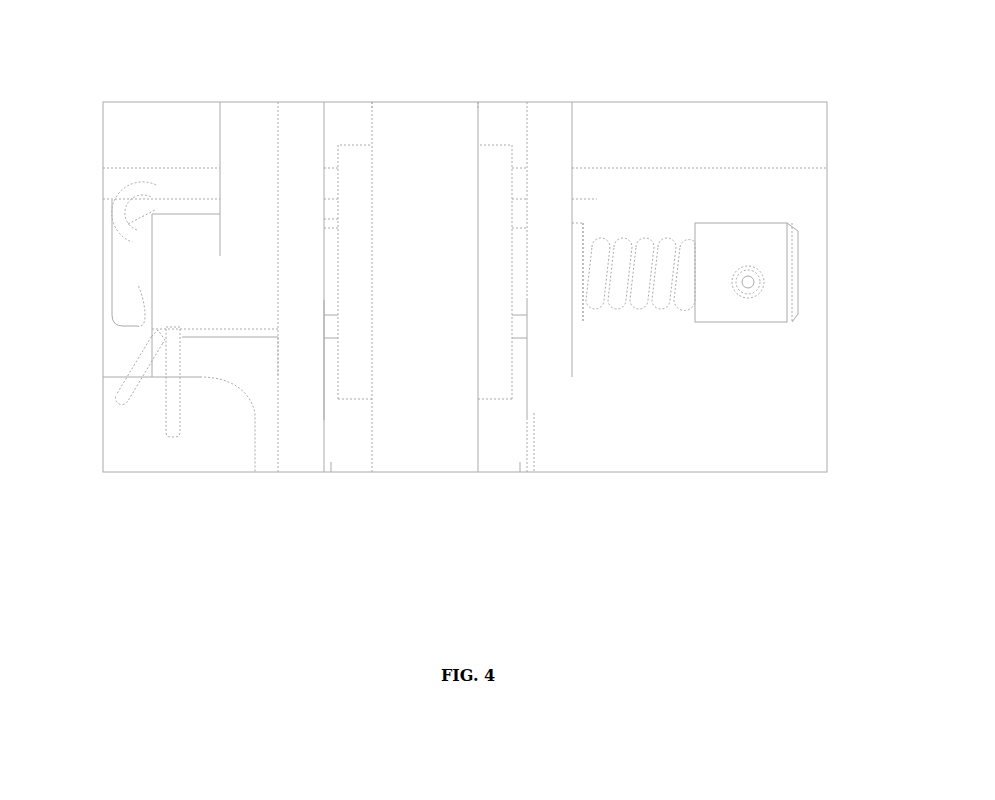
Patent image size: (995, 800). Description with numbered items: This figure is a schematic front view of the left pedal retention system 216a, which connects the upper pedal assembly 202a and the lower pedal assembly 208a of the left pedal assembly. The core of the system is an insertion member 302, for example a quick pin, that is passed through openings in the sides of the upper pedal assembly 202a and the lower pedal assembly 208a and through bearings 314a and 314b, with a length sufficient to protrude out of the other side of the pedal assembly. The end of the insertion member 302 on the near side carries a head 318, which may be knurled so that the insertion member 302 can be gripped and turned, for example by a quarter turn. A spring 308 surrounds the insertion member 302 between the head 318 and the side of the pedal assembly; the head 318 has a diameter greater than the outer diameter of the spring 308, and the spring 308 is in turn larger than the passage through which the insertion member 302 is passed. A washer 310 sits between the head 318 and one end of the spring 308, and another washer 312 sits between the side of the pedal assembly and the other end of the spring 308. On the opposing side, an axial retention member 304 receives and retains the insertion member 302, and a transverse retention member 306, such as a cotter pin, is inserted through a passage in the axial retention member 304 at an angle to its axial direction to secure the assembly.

The insertion member 302 is at (801, 220).
The upper pedal assembly 202a is at (301, 131).
The left pedal retention system 216a is at (369, 103).
The lower pedal assembly 208a is at (426, 109).
The axial retention member 304 is at (174, 300).
The transverse retention member 306 is at (173, 451).
The spring 308 is at (641, 325).
The washer 310 is at (703, 211).
The washer 312 is at (578, 211).
The head 318 is at (794, 285).
The bearing 314a is at (333, 327).
The bearing 314b is at (521, 329).